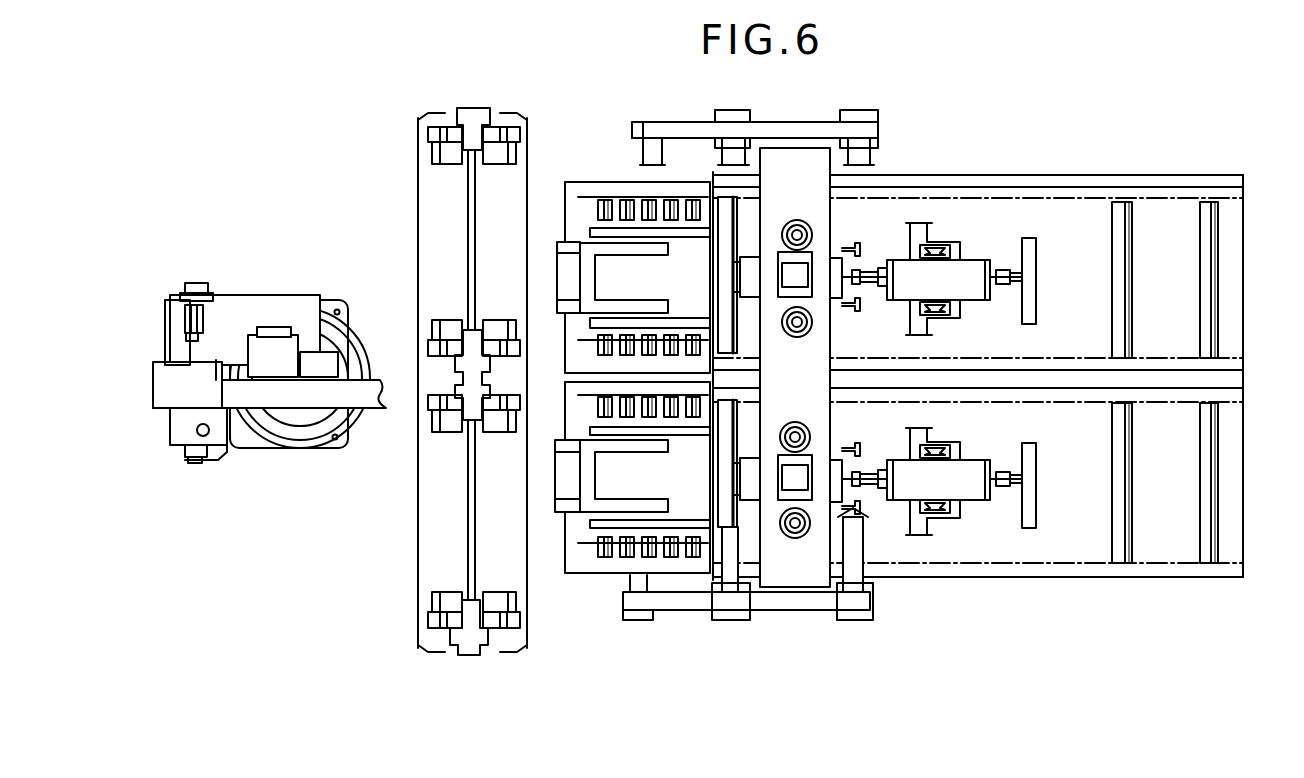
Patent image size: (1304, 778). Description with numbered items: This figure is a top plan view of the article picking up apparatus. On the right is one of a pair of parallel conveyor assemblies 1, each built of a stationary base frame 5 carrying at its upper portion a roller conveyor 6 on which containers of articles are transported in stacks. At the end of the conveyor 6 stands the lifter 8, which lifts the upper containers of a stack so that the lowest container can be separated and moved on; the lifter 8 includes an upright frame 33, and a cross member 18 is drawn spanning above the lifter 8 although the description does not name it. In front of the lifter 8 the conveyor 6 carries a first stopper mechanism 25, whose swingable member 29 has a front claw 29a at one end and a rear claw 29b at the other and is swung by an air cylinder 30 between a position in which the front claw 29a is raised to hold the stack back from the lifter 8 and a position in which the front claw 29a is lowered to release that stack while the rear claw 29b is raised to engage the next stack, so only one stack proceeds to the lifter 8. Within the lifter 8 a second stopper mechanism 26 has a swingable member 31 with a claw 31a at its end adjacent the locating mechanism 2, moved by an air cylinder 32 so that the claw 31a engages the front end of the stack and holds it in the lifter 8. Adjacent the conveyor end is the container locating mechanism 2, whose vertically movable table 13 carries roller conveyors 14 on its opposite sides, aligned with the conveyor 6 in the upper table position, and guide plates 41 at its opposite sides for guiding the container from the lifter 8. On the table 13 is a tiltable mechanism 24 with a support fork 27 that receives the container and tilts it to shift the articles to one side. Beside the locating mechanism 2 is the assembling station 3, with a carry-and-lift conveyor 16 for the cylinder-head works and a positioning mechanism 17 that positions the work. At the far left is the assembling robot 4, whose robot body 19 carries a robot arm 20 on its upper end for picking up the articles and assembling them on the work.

The conveyor assembly 1 is at (1006, 373).
The container locating mechanism 2 is at (596, 385).
The assembling station 3 is at (443, 402).
The assembling robot 4 is at (269, 376).
The stationary base frame 5 is at (1018, 176).
The conveyor 6 is at (1222, 283).
The lifter 8 is at (810, 379).
The table 13 is at (596, 181).
The roller conveyor 14 is at (596, 208).
The conveyor 16 is at (469, 655).
The positioning mechanism 17 is at (440, 325).
The upper cross bar 18 is at (786, 122).
The robot body 19 is at (276, 330).
The robot arm 20 is at (258, 400).
The tiltable mechanism 24 is at (557, 270).
The first stopper mechanism 25 is at (975, 250).
The second stopper mechanism 26 is at (850, 290).
The support fork 27 is at (608, 300).
The swingable member 29 is at (959, 381).
The front claw 29a is at (893, 282).
The rear claw 29b is at (986, 300).
The air cylinder 30 is at (1040, 255).
The swingable member 31 is at (752, 295).
The claw 31a is at (745, 270).
The air cylinder 32 is at (868, 274).
The upright frame 33 is at (808, 590).
The guide plate 41 is at (652, 197).